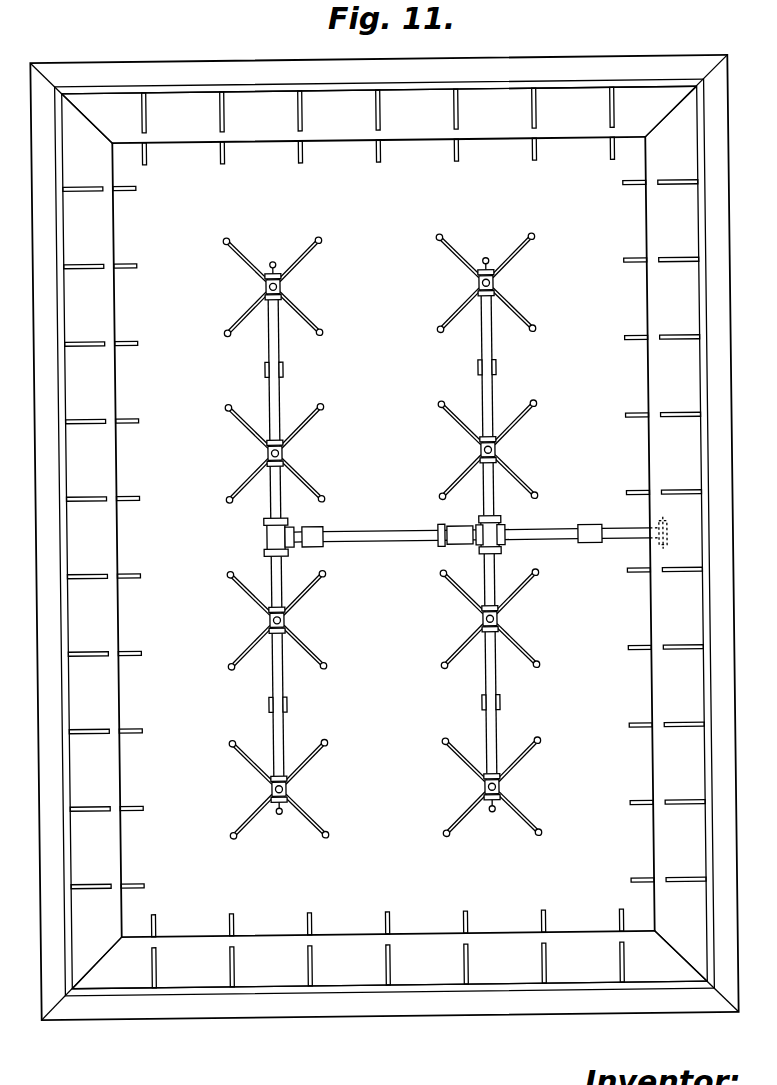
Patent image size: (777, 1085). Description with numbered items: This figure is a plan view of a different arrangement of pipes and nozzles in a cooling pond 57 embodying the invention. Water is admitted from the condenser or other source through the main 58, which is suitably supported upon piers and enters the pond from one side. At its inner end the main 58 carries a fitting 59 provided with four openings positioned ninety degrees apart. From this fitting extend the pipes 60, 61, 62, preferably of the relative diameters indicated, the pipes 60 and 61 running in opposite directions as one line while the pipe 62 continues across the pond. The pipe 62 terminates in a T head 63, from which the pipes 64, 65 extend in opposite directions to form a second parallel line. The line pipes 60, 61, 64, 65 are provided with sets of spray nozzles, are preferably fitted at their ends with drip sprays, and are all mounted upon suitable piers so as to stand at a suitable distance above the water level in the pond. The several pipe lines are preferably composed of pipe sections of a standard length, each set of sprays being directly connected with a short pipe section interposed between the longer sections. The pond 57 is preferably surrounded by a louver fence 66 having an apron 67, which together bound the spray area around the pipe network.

The cooling pond 57 is at (384, 537).
The main 58 is at (667, 534).
The fitting 59 is at (499, 526).
The pipe 60 is at (495, 576).
The pipe 61 is at (485, 498).
The pipe 62 is at (383, 530).
The T head 63 is at (267, 535).
The pipe 64 is at (281, 670).
The pipe 65 is at (281, 393).
The louver fence 66 is at (210, 992).
The apron 67 is at (203, 122).